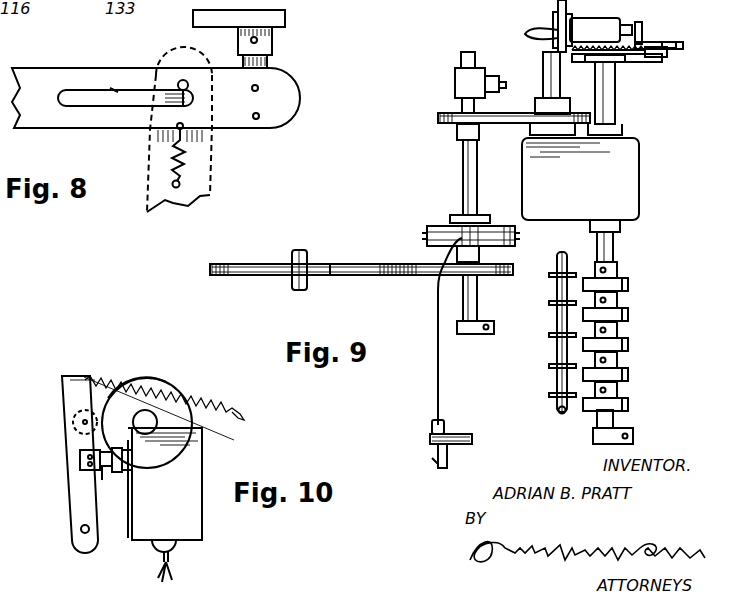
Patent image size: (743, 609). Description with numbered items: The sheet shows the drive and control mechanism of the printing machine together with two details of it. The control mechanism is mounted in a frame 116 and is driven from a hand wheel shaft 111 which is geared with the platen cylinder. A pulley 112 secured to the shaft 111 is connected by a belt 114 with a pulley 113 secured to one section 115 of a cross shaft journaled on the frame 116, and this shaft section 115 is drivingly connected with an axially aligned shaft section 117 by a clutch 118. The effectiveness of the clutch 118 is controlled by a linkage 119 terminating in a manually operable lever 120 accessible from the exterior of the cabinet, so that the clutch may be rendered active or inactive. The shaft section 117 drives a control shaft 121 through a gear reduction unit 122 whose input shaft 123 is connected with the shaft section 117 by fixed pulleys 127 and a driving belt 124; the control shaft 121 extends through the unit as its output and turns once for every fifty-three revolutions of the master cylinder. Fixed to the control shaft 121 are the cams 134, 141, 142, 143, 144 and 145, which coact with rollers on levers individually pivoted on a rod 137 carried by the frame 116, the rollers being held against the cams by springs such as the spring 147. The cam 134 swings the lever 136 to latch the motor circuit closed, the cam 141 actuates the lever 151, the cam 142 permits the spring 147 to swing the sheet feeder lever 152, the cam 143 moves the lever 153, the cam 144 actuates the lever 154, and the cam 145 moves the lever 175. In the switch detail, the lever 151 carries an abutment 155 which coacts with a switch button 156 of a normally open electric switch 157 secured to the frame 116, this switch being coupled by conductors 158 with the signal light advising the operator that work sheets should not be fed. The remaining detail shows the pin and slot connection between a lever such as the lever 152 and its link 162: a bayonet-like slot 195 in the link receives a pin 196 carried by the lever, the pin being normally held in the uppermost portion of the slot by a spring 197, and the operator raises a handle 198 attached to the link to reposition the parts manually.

In FIG. 9, the hand wheel shaft 111 is at (300, 250).
In FIG. 9, the pulley 112 is at (255, 262).
In FIG. 9, the pulley 113 is at (456, 270).
In FIG. 9, the belt 114 is at (405, 255).
In FIG. 9, the shaft section 115 is at (479, 300).
In FIG. 9, the frame 116 is at (560, 10).
In FIG. 9, the shaft section 117 is at (463, 179).
In FIG. 9, the clutch 118 is at (440, 226).
In FIG. 9, the linkage 119 is at (436, 348).
In FIG. 9, the lever 120 is at (432, 446).
In FIG. 9, the control shaft 121 is at (615, 92).
In FIG. 10, the control shaft 121 is at (155, 418).
In FIG. 9, the gear reduction unit 122 is at (580, 179).
In FIG. 9, the input shaft 123 is at (543, 70).
In FIG. 9, the driving belt 124 is at (502, 118).
In FIG. 9, the fixed pulleys 127 is at (440, 113).
In FIG. 9, the cam 134 is at (630, 404).
In FIG. 9, the lever 136 is at (553, 395).
In FIG. 9, the rod 137 is at (557, 410).
In FIG. 9, the cam 141 is at (648, 58).
In FIG. 10, the cam 141 is at (154, 392).
In FIG. 9, the cam 142 is at (630, 286).
In FIG. 9, the cam 143 is at (630, 315).
In FIG. 9, the cam 144 is at (630, 345).
In FIG. 9, the cam 145 is at (630, 375).
In FIG. 9, the spring 147 is at (584, 56).
In FIG. 10, the spring 147 is at (108, 378).
In FIG. 9, the lever 151 is at (684, 45).
In FIG. 10, the lever 151 is at (70, 376).
In FIG. 8, the lever 152 is at (152, 162).
In FIG. 9, the lever 152 is at (556, 275).
In FIG. 9, the lever 153 is at (553, 306).
In FIG. 9, the lever 154 is at (553, 337).
In FIG. 9, the abutment 155 is at (645, 30).
In FIG. 10, the abutment 155 is at (80, 460).
In FIG. 9, the switch button 156 is at (638, 30).
In FIG. 10, the switch button 156 is at (110, 472).
In FIG. 9, the electric switch 157 is at (596, 24).
In FIG. 10, the electric switch 157 is at (165, 484).
In FIG. 9, the conductors 158 is at (530, 28).
In FIG. 10, the conductors 158 is at (170, 566).
In FIG. 8, the link 162 is at (128, 55).
In FIG. 9, the lever 175 is at (553, 368).
In FIG. 8, the bayonet-like slot 195 is at (112, 92).
In FIG. 8, the pin 196 is at (190, 85).
In FIG. 8, the spring 197 is at (185, 158).
In FIG. 8, the handle 198 is at (280, 19).